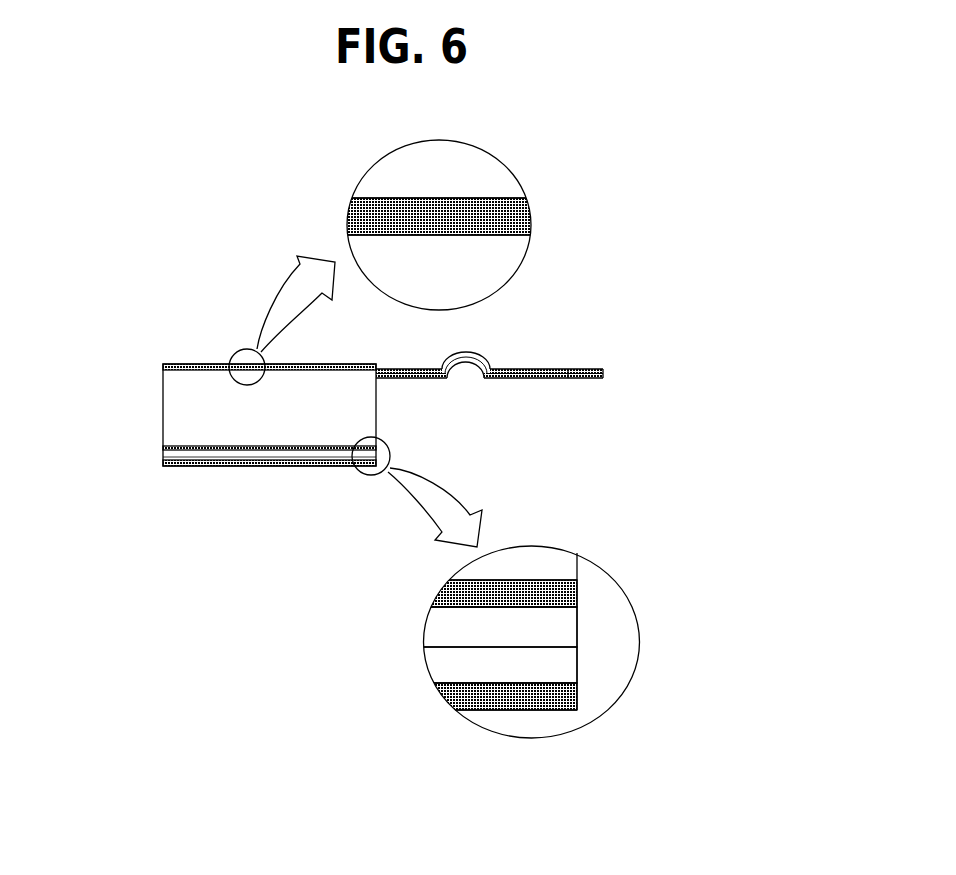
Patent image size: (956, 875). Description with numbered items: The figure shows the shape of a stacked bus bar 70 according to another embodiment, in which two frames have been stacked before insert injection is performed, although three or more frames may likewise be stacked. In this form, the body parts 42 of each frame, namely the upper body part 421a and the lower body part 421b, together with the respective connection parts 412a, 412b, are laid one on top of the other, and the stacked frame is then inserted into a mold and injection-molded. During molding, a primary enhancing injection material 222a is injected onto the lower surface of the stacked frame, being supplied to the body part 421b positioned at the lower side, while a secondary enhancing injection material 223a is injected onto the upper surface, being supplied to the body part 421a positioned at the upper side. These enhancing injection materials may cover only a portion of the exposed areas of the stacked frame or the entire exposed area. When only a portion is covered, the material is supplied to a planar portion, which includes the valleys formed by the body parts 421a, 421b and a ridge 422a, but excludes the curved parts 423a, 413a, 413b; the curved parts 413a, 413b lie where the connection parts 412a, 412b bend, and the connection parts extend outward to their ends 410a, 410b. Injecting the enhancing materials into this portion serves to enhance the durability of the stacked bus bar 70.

The stacked bus bar 70 is at (144, 197).
The body parts 42 is at (188, 339).
The curved part 423a is at (185, 400).
The ridge 422a is at (390, 232).
The secondary enhancing injection material 223a is at (493, 218).
The primary enhancing injection material 222a is at (442, 695).
The body part (upper frame) 421a is at (470, 628).
The body part (lower frame) 421b is at (460, 664).
The lead tab upper surface 410a is at (599, 362).
The lead tab lower surface 410b is at (587, 389).
The connection part 412a is at (422, 369).
The connection part 412b is at (402, 378).
The curved part 413a is at (477, 357).
The curved part 413b is at (453, 379).